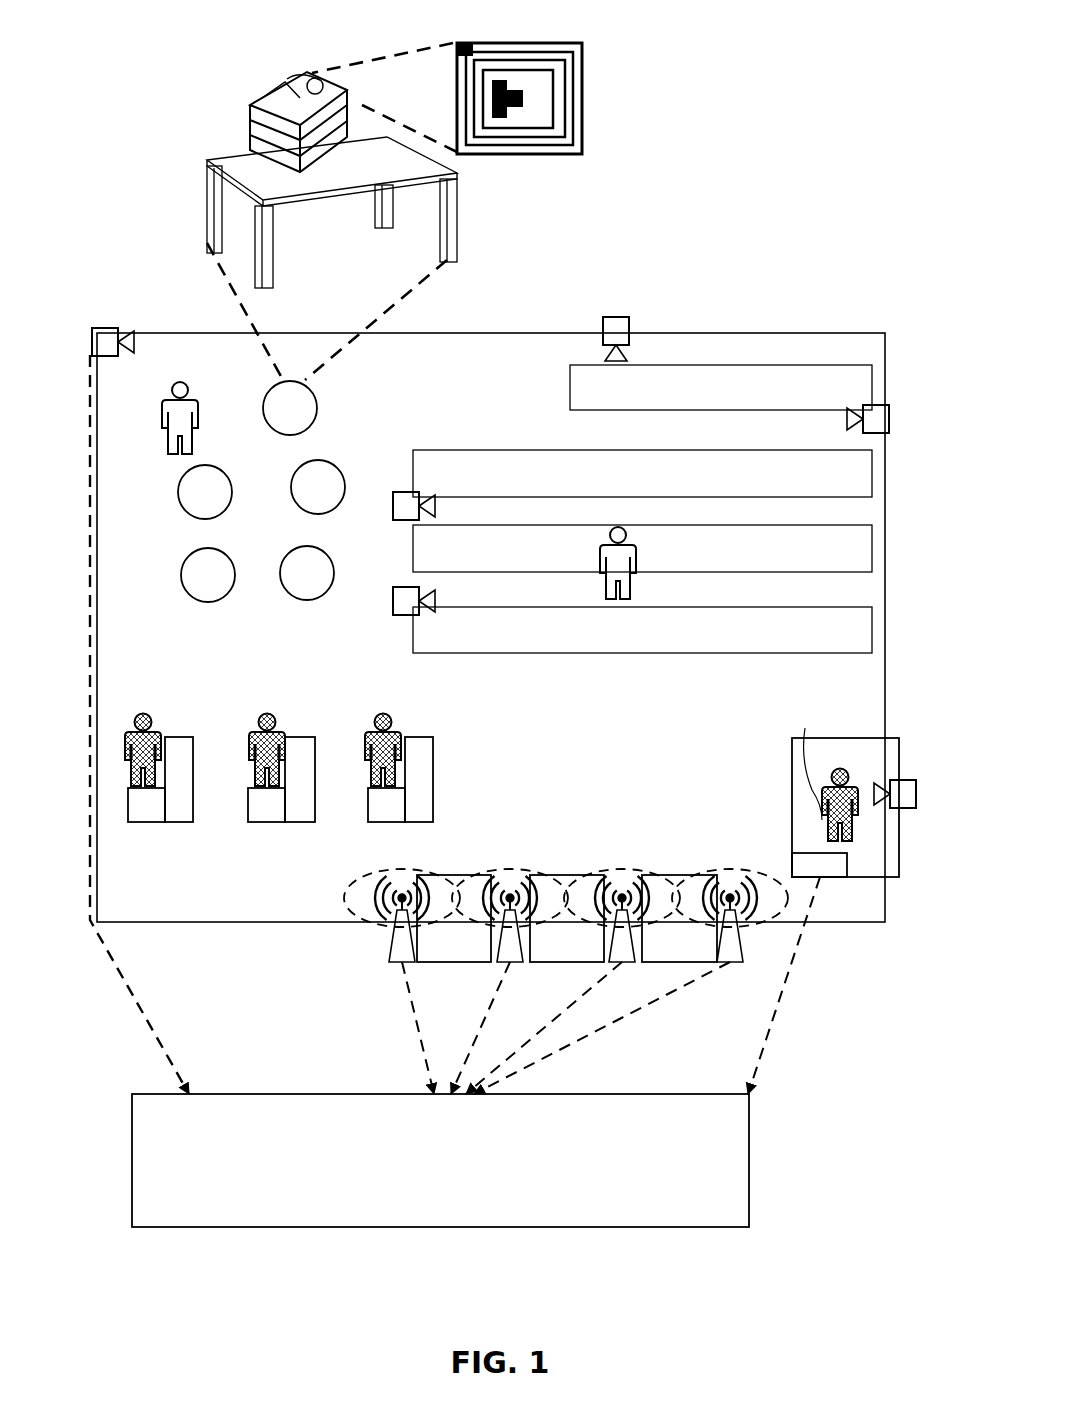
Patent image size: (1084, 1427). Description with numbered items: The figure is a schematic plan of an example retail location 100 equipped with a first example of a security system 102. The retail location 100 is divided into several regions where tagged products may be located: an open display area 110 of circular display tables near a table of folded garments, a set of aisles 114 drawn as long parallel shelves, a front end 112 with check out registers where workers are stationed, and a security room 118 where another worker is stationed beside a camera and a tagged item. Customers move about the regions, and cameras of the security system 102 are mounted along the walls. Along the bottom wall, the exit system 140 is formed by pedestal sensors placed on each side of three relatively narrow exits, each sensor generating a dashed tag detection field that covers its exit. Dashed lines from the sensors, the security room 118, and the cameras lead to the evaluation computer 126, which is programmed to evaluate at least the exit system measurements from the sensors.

The retail location 100 is at (499, 616).
The security system 102 is at (113, 297).
The open display area 110 is at (365, 360).
The front end 112 is at (278, 721).
The aisles 114 is at (380, 568).
The security room 118 is at (866, 773).
The evaluation computer 126 is at (604, 1094).
The exit system 140 is at (526, 910).